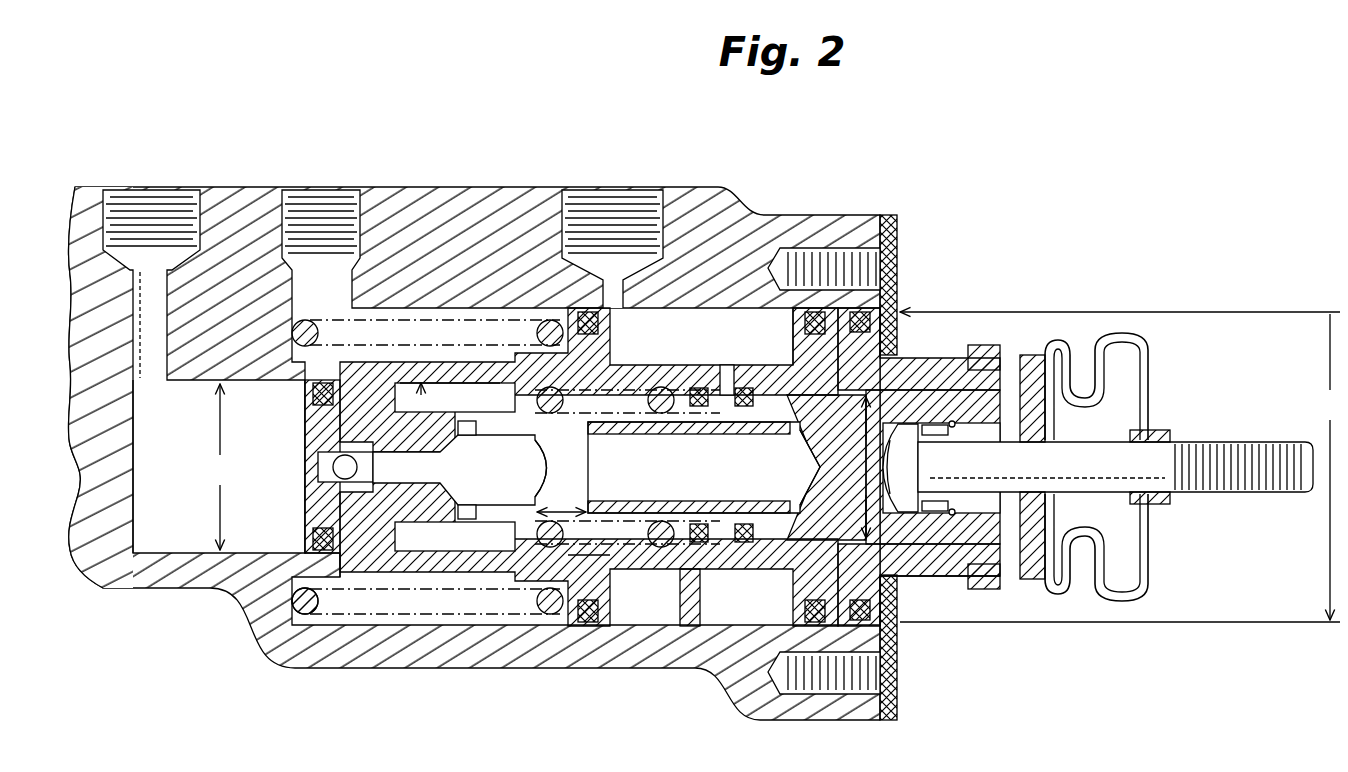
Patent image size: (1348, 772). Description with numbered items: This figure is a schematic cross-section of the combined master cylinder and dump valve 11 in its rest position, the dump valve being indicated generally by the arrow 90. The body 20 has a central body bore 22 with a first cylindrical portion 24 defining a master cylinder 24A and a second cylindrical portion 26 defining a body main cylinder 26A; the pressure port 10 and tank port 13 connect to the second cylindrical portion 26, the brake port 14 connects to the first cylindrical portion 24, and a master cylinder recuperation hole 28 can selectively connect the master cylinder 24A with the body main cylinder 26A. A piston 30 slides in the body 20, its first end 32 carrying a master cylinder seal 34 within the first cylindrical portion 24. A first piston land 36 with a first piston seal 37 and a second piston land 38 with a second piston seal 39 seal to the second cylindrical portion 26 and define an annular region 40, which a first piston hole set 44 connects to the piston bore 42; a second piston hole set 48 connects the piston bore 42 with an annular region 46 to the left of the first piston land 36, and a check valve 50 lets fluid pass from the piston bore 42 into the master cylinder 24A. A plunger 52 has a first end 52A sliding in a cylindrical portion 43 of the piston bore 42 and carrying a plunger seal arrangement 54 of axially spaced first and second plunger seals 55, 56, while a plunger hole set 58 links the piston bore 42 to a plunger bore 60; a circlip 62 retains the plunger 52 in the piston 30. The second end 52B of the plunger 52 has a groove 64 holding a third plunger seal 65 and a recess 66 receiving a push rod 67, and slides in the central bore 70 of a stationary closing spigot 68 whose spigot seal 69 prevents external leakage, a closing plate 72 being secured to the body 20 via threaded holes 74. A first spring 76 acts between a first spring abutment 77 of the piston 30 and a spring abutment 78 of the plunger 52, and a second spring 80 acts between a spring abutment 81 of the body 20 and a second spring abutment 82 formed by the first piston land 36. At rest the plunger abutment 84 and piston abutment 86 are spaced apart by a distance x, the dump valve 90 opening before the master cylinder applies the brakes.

The dump valve 90 is at (850, 130).
The combined master cylinder and dump valve 11 is at (878, 192).
The body 20 is at (748, 215).
The brake port 14 is at (152, 202).
The tank port 13 is at (320, 202).
The pressure port 10 is at (613, 202).
The first cylindrical portion 24 is at (215, 540).
The master cylinder 24A is at (155, 505).
The central body bore 22 is at (480, 392).
The second cylindrical portion 26 is at (698, 302).
The body main cylinder 26A is at (542, 322).
The master cylinder recuperation hole 28 is at (300, 396).
The piston 30 is at (305, 505).
The first end 32 is at (305, 428).
The master cylinder seal 34 is at (352, 540).
The first piston land 36 is at (600, 560).
The first piston seal 37 is at (586, 612).
The second piston land 38 is at (856, 640).
The second piston seal 39 is at (810, 628).
The annular region 40 is at (655, 332).
The piston bore 42 is at (500, 487).
The cylindrical portion 43 is at (614, 424).
The first piston hole set 44 is at (706, 545).
The annular region 46 is at (442, 350).
The second piston hole set 48 is at (468, 512).
The check valve 50 is at (352, 478).
The plunger 52 is at (915, 394).
The first end 52A is at (713, 452).
The second end 52B is at (930, 582).
The plunger seal arrangement 54 is at (740, 352).
The first plunger seal 55 is at (668, 545).
The second plunger seal 56 is at (735, 542).
The plunger hole set 58 is at (796, 444).
The plunger bore 60 is at (704, 467).
The circlip 62 is at (815, 538).
The groove 64 is at (1022, 478).
The third plunger seal 65 is at (1042, 358).
The recess 66 is at (996, 490).
The push rod 67 is at (1150, 500).
The closing spigot 68 is at (985, 346).
The spigot seal 69 is at (868, 332).
The central bore 70 is at (930, 578).
The closing plate 72 is at (897, 700).
The threaded holes 74 is at (852, 272).
The first spring 76 is at (665, 542).
The first spring abutment 77 is at (549, 416).
The spring abutment 78 is at (664, 416).
The second spring 80 is at (320, 606).
The spring abutment 81 is at (305, 618).
The second spring abutment 82 is at (545, 615).
The plunger abutment 84 is at (636, 506).
The piston abutment 86 is at (548, 470).